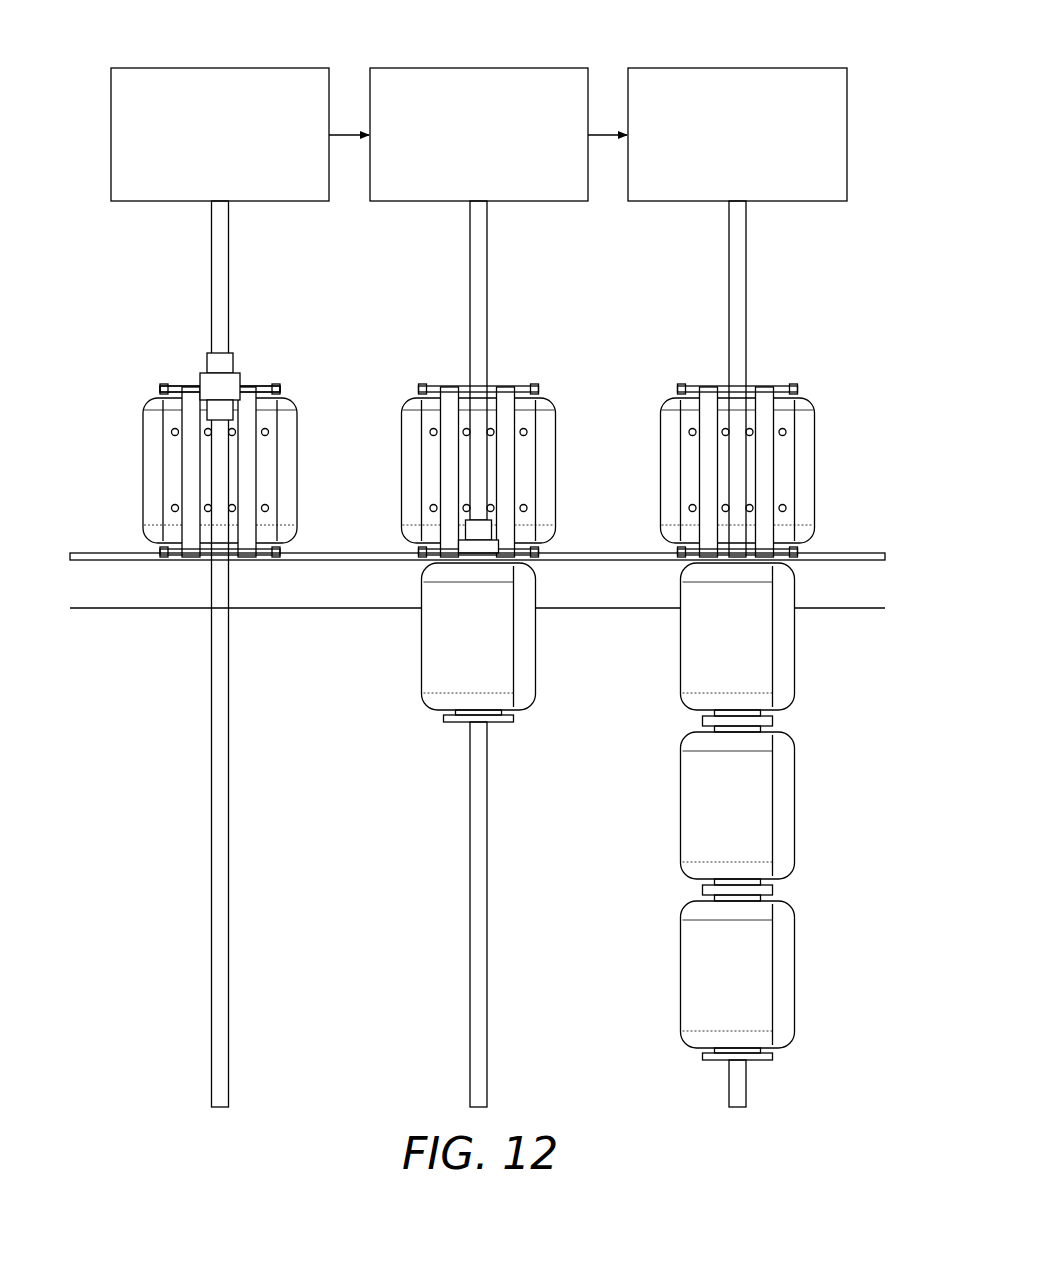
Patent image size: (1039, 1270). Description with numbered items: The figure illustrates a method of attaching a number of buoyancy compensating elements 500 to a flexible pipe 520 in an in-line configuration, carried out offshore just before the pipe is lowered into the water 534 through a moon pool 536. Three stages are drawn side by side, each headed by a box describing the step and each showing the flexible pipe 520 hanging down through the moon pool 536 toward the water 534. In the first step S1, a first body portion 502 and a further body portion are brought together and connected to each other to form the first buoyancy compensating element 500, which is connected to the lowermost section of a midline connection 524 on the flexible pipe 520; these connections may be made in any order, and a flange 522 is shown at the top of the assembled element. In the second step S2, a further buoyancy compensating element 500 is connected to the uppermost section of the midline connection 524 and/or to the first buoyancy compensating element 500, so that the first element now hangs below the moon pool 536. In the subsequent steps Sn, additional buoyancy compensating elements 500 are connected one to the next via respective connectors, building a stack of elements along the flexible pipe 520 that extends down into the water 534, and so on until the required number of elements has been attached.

The first step S1 is at (301, 68).
The second step S2 is at (561, 68).
The subsequent steps Sn is at (820, 68).
The buoyancy compensating element 500 is at (432, 720).
The first body portion 502 is at (150, 467).
The flexible pipe 520 is at (229, 251).
The flange 522 is at (164, 386).
The midline connection 524 is at (240, 360).
The water 534 is at (93, 609).
The moon pool 536 is at (347, 552).